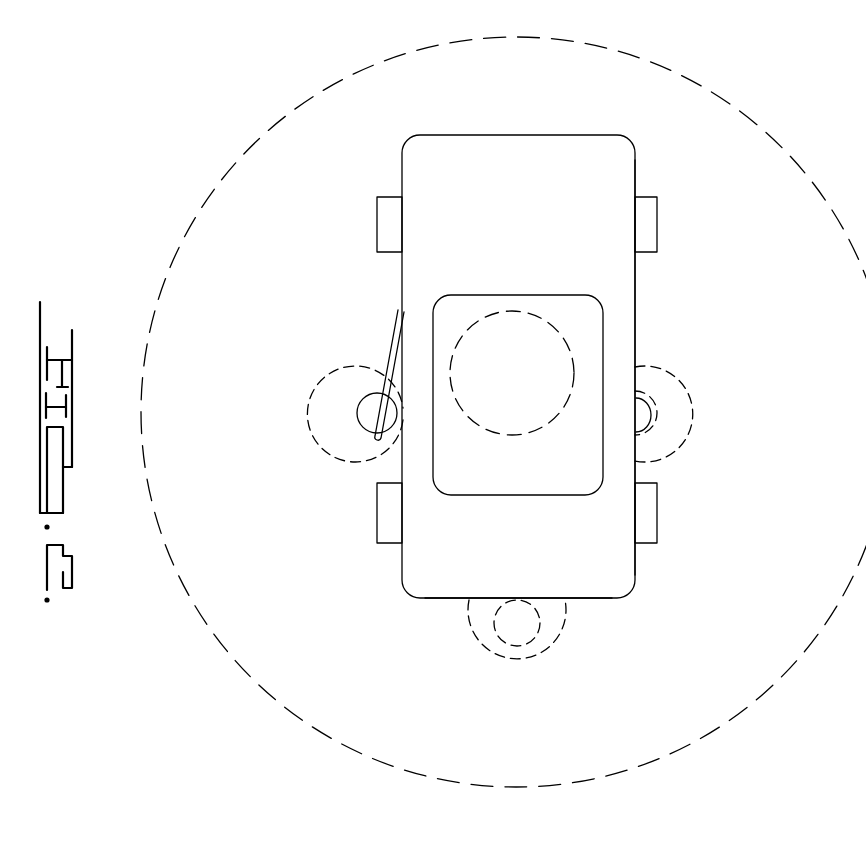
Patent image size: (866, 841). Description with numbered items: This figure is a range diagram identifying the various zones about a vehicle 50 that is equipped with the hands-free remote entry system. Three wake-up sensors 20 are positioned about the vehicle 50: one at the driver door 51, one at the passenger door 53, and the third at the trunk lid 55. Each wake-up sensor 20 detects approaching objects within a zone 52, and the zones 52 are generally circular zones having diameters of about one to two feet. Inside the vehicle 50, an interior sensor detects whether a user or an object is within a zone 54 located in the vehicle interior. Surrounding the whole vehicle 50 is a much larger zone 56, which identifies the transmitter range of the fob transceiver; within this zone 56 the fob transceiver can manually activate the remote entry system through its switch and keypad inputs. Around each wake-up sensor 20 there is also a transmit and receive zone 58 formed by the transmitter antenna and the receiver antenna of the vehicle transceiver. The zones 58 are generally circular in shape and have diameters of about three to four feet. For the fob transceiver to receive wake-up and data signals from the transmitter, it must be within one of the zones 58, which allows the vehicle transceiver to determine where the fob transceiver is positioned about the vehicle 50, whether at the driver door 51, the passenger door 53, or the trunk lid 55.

The wake-up sensor 20 is at (373, 394).
The vehicle 50 is at (418, 156).
The driver door 51 is at (398, 333).
The zone 52 is at (360, 435).
The passenger door 53 is at (635, 333).
The zone 54 is at (523, 435).
The trunk lid 55 is at (470, 596).
The zone 56 is at (270, 695).
The transmit and receive zone 58 is at (307, 406).